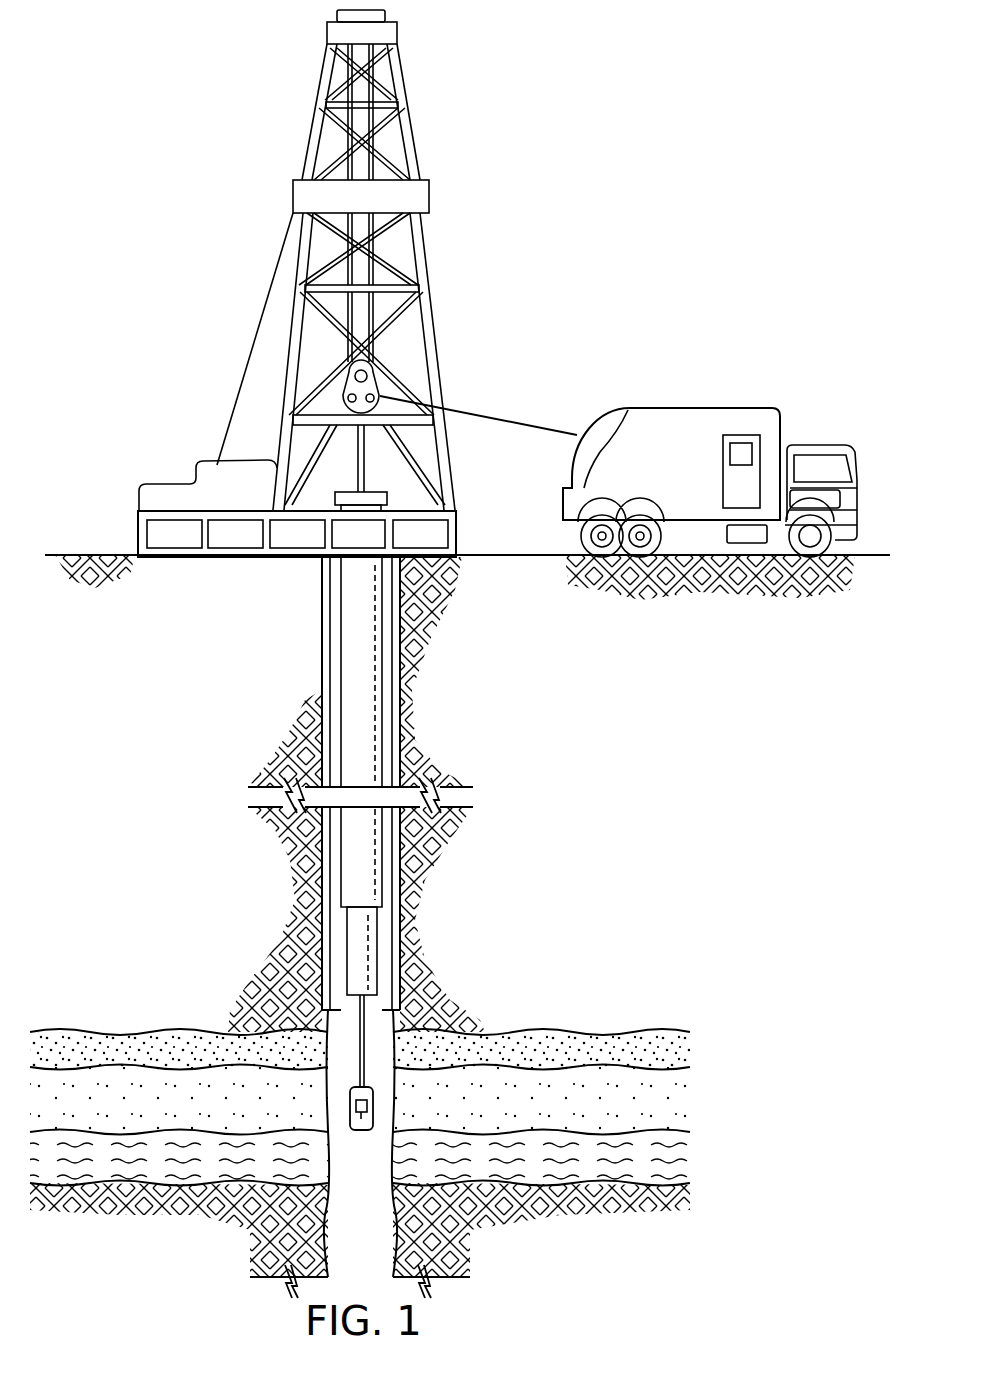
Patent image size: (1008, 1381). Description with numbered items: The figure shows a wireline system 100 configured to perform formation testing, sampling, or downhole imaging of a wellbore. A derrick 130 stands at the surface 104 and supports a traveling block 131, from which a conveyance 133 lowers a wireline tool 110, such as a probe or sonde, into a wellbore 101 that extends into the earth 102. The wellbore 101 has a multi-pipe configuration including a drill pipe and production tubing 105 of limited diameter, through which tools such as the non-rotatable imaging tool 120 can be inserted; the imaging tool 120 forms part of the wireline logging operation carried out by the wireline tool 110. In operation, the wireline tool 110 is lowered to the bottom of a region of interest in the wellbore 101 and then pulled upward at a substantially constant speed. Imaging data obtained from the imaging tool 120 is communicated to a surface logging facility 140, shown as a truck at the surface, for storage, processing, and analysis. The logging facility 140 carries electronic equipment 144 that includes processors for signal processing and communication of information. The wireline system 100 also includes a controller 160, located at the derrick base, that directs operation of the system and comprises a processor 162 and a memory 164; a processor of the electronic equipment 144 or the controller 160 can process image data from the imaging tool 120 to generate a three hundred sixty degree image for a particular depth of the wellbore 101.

The wireline system 100 is at (198, 129).
The wellbore 101 is at (335, 1215).
The earth 102 is at (162, 856).
The surface 104 is at (88, 555).
The production tubing 105 is at (383, 870).
The wireline tool 110 is at (375, 1105).
The non-rotatable imaging tool 120 is at (362, 1130).
The derrick 130 is at (453, 500).
The traveling block 131 is at (378, 383).
The conveyance 133 is at (505, 407).
The surface logging facility 140 is at (692, 408).
The electronic equipment 144 is at (723, 452).
The controller 160 is at (282, 616).
The processor 162 is at (167, 542).
The memory 164 is at (240, 542).